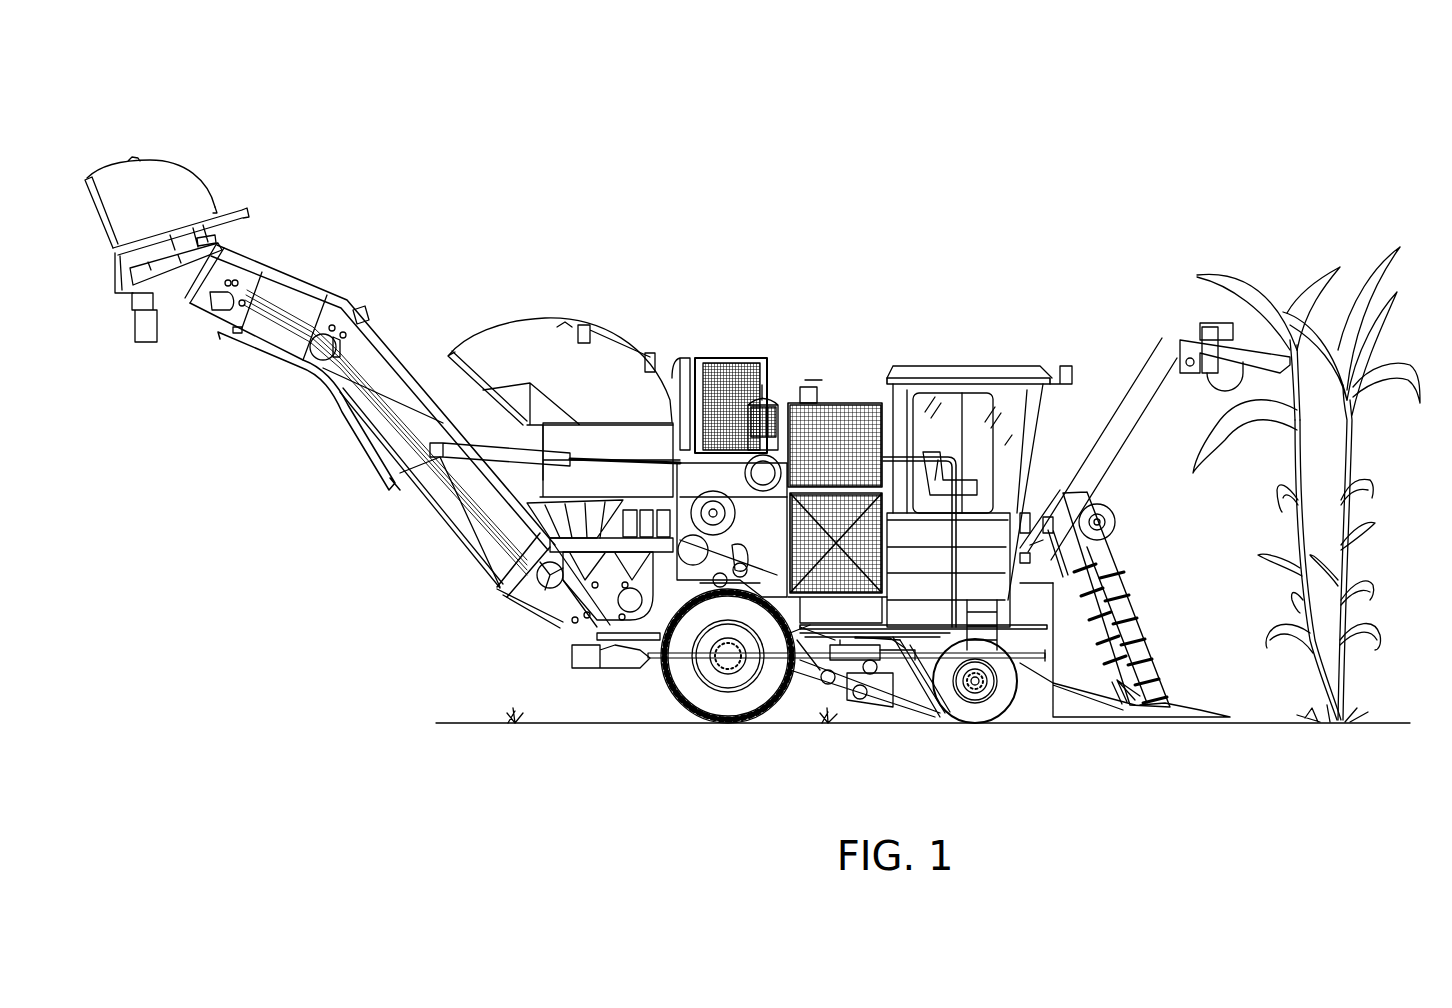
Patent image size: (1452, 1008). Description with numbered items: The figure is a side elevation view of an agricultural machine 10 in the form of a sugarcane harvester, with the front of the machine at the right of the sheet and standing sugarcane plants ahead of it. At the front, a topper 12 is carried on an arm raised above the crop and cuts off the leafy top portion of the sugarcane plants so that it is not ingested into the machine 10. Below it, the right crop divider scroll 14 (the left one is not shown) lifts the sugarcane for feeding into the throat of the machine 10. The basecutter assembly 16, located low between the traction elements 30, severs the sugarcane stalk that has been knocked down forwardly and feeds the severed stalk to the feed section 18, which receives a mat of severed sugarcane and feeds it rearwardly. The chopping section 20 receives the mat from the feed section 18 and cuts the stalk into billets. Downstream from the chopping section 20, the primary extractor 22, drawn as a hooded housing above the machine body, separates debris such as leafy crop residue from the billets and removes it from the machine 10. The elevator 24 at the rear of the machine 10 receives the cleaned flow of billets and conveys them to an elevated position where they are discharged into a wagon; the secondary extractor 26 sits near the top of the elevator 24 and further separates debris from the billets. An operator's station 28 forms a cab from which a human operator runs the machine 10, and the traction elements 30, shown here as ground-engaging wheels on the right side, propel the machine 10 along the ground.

The agricultural machine 10 is at (1150, 139).
The topper 12 is at (1217, 328).
The crop divider scroll 14 is at (1103, 645).
The basecutter assembly 16 is at (907, 707).
The feed section 18 is at (793, 637).
The chopping section 20 is at (651, 657).
The primary extractor 22 is at (517, 343).
The elevator 24 is at (393, 345).
The secondary extractor 26 is at (172, 180).
The operator's station 28 is at (968, 372).
The traction element 30 is at (724, 705).